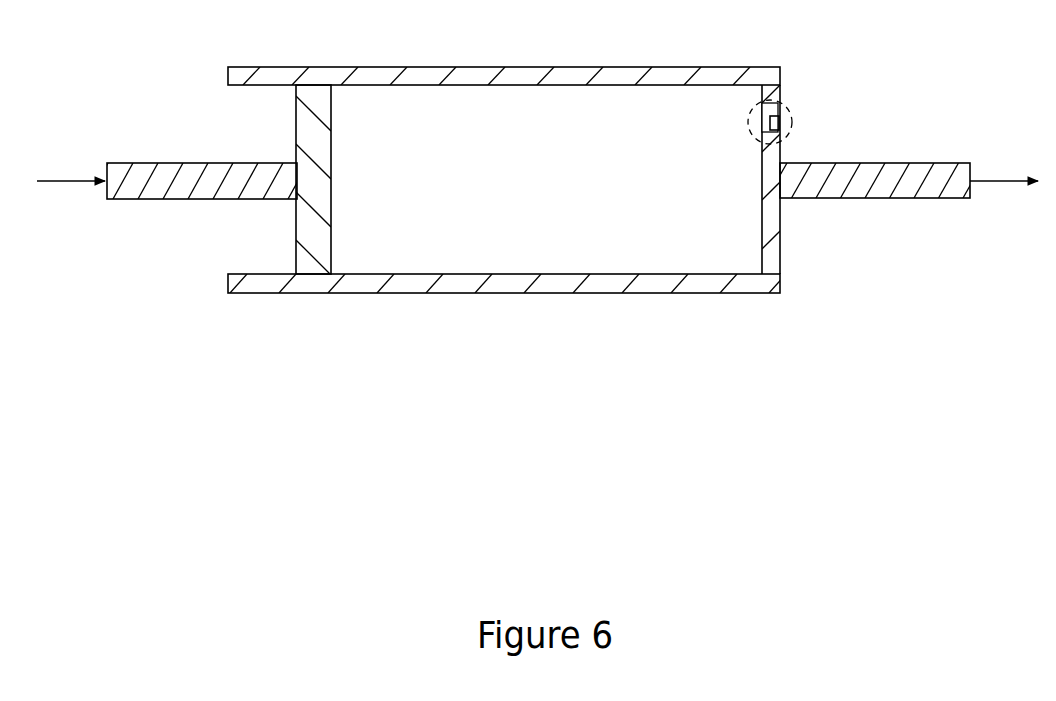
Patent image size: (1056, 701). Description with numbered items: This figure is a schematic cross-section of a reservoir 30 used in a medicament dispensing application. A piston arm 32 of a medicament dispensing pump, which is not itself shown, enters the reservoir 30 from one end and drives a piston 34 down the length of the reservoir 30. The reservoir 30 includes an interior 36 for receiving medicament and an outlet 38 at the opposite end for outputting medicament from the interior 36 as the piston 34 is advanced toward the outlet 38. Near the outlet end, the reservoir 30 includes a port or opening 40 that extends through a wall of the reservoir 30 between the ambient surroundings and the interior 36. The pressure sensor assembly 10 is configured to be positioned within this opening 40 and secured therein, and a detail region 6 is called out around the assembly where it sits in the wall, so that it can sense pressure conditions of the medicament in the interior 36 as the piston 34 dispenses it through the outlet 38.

The reservoir 30 is at (523, 67).
The piston arm 32 is at (202, 163).
The piston 34 is at (313, 97).
The interior 36 is at (533, 192).
The outlet 38 is at (970, 190).
The port or opening 40 is at (752, 133).
The sensor 6 is at (788, 113).
The pressure sensor assembly 10 is at (781, 123).